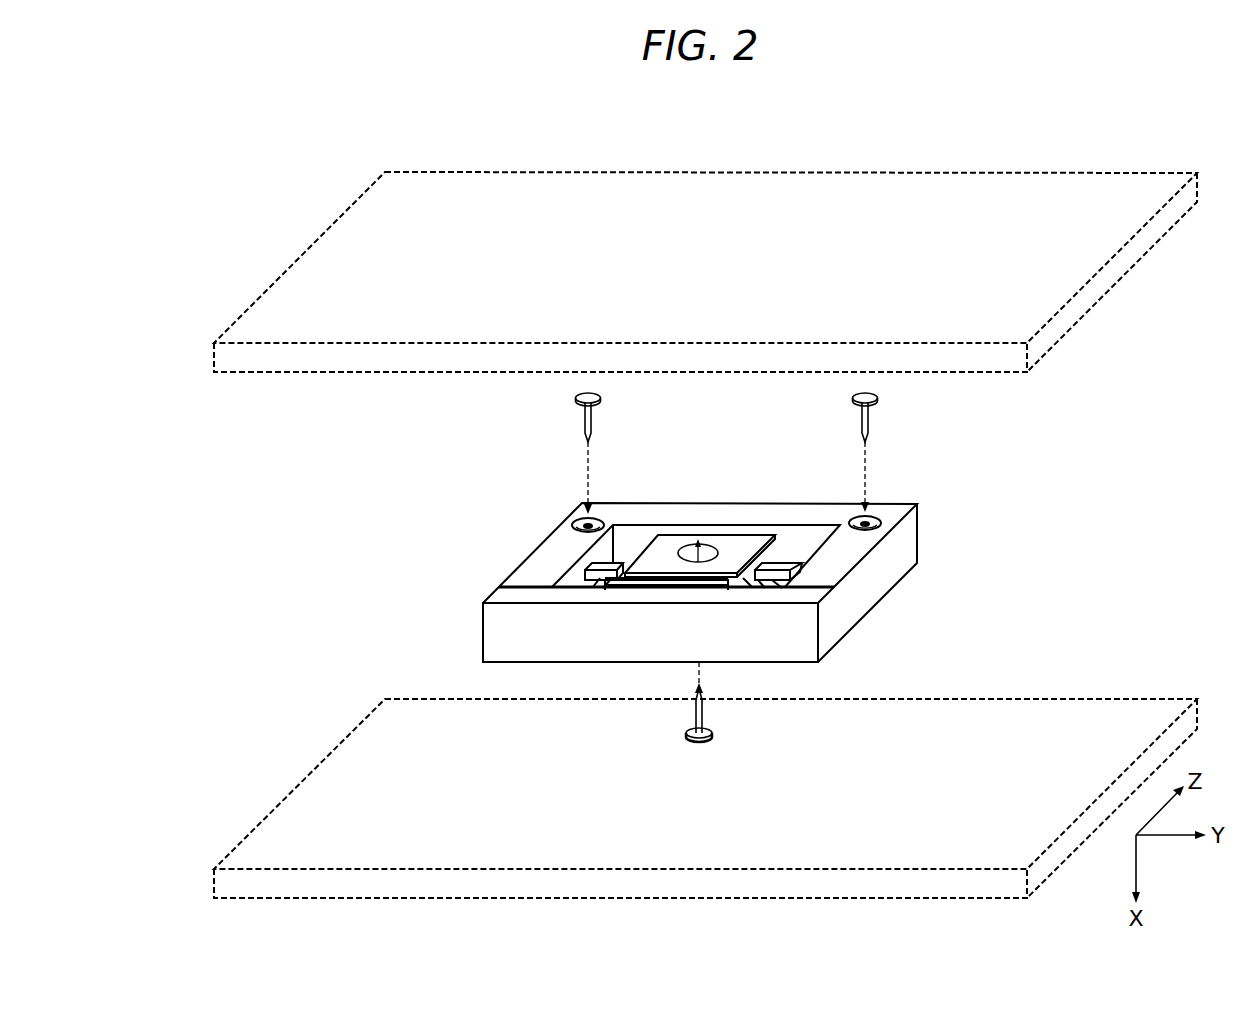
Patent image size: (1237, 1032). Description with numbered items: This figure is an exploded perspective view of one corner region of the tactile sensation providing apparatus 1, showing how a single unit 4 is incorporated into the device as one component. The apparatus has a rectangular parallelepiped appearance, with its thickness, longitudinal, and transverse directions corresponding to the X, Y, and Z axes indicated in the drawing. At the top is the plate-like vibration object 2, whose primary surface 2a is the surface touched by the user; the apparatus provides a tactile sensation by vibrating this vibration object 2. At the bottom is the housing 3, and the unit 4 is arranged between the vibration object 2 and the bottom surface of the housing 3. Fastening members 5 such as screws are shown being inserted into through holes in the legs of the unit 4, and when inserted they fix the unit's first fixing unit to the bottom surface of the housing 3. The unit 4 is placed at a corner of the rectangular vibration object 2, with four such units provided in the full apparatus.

The tactile sensation providing apparatus 1 is at (230, 240).
The vibration object 2 is at (1122, 298).
The primary surface 2a is at (1067, 260).
The housing 3 is at (295, 764).
The unit 4 is at (498, 541).
The fastening member 5 is at (585, 416).